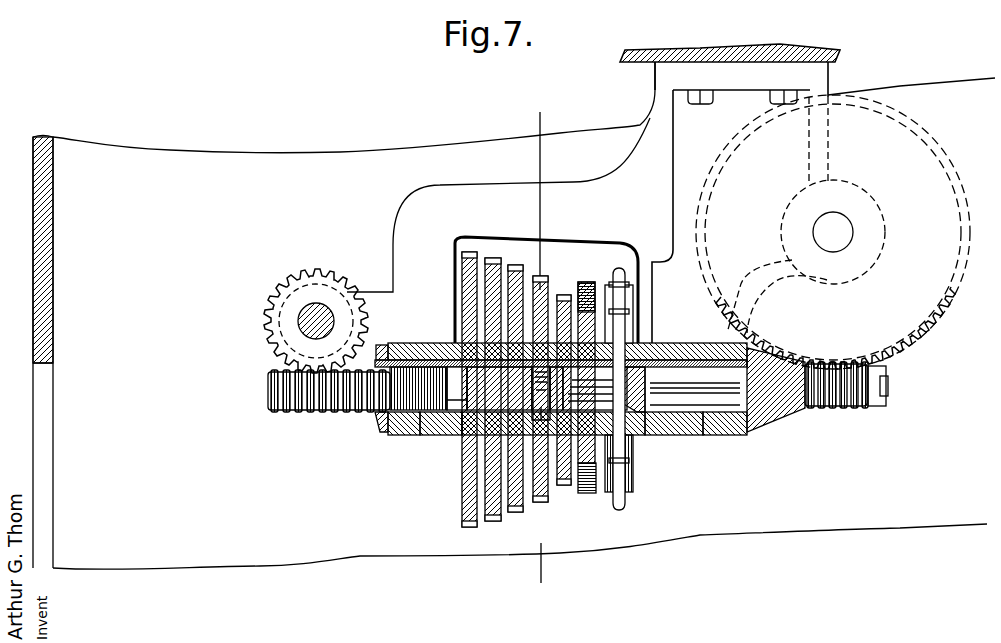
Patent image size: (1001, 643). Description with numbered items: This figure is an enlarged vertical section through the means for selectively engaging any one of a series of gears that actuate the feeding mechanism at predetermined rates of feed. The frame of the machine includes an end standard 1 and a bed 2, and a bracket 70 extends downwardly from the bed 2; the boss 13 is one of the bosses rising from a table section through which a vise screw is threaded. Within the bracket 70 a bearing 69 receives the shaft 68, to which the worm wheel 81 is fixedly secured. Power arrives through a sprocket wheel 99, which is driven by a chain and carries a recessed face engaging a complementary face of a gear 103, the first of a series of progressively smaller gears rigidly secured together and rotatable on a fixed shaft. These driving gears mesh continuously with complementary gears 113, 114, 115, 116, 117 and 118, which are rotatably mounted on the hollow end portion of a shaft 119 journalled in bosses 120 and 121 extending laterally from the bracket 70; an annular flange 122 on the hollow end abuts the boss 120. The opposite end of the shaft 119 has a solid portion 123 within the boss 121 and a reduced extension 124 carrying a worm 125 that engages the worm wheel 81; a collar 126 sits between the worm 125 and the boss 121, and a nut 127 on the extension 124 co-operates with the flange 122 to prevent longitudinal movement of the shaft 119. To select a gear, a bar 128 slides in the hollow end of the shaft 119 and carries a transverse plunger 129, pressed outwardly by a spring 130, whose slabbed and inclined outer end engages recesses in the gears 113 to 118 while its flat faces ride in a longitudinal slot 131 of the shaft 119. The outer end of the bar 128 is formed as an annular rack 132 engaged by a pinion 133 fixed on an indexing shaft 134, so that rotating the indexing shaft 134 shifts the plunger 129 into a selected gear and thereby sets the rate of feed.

The end standard 1 is at (53, 330).
The bed 2 is at (838, 50).
The boss 13 is at (540, 112).
The shaft 68 is at (846, 238).
The bearing 69 is at (882, 218).
The bracket 70 is at (578, 187).
The worm wheel 81 is at (905, 325).
The sprocket wheel 99 is at (633, 482).
The gear 103 is at (593, 495).
The gear 113 is at (580, 463).
The gear 114 is at (565, 487).
The gear 115 is at (540, 503).
The gear 116 is at (521, 513).
The gear 117 is at (497, 523).
The gear 118 is at (470, 525).
The shaft 119 is at (413, 425).
The boss 120 is at (437, 430).
The boss 121 is at (678, 428).
The annular flange 122 is at (387, 420).
The solid portion 123 is at (722, 430).
The reduced extension 124 is at (793, 412).
The worm 125 is at (830, 406).
The collar 126 is at (772, 418).
The nut 127 is at (878, 406).
The bar 128 is at (457, 377).
The plunger 129 is at (556, 402).
The spring 130 is at (648, 343).
The slot 131 is at (597, 403).
The annular rack 132 is at (335, 412).
The pinion 133 is at (268, 335).
The indexing shaft 134 is at (320, 315).